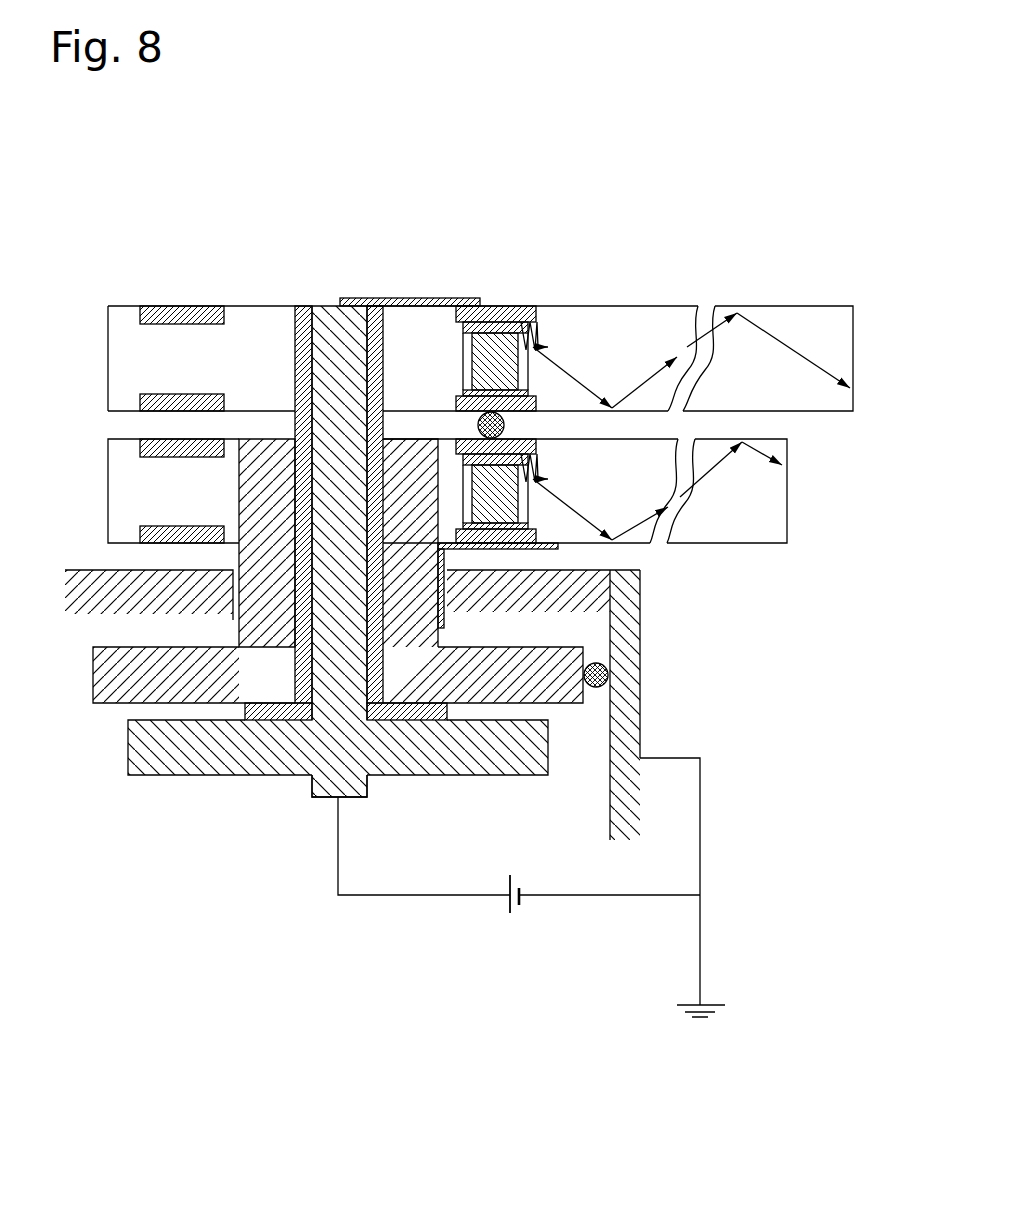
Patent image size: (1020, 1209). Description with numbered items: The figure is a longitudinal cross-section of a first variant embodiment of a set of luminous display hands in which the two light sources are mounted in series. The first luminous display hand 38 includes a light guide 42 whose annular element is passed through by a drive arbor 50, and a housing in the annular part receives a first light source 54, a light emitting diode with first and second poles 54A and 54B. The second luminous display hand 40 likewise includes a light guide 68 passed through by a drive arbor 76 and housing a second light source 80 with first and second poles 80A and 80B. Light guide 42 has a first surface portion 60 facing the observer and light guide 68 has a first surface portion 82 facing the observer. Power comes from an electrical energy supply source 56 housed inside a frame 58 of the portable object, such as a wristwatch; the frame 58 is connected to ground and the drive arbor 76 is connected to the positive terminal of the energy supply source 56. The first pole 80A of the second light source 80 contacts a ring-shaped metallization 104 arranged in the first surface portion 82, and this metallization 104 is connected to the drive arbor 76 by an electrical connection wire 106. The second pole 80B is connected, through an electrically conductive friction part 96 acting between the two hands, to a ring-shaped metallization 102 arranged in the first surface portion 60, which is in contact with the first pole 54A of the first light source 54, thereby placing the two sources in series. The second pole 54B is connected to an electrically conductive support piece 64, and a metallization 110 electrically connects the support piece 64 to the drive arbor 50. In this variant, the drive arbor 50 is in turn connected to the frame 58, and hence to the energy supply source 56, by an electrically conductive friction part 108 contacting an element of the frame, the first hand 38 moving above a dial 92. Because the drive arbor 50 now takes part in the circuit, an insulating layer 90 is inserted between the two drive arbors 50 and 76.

The first luminous display hand 38 is at (722, 488).
The second luminous display hand 40 is at (588, 410).
The light guide 42 is at (123, 517).
The drive arbor 50 is at (130, 664).
The first light source 54 is at (492, 497).
The first pole 54A is at (620, 442).
The second pole 54B is at (465, 546).
The electrical energy supply source 56 is at (512, 926).
The frame 58 is at (620, 794).
The first surface portion 60 is at (643, 342).
The support piece 64 is at (525, 543).
The light guide 68 is at (123, 385).
The drive arbor 76 is at (320, 792).
The second light source 80 is at (497, 360).
The first pole 80A is at (491, 412).
The second pole 80B is at (470, 394).
The first surface portion 82 is at (782, 310).
The insulating layer 90 is at (265, 721).
The dial 92 is at (125, 577).
The electrically conductive friction part 96 is at (559, 346).
The ring-shaped metallization 102 is at (478, 422).
The ring-shaped metallization 104 is at (460, 305).
The electrical connection wire 106 is at (355, 298).
The electrically conductive friction part 108 is at (608, 678).
The metallization 110 is at (437, 607).